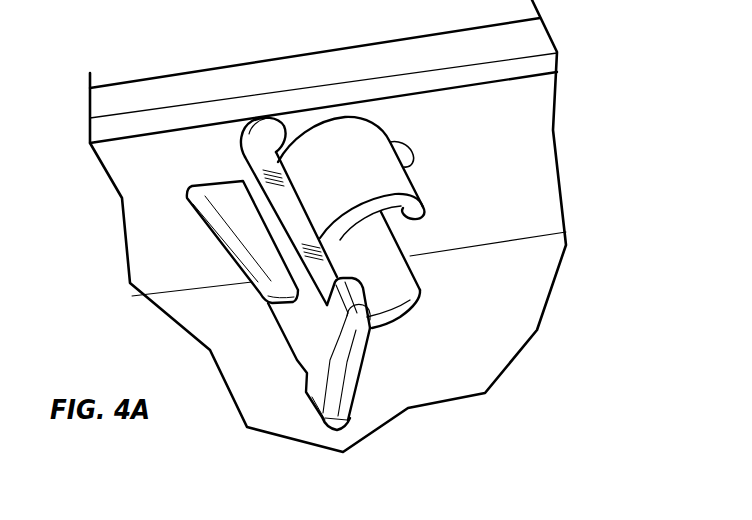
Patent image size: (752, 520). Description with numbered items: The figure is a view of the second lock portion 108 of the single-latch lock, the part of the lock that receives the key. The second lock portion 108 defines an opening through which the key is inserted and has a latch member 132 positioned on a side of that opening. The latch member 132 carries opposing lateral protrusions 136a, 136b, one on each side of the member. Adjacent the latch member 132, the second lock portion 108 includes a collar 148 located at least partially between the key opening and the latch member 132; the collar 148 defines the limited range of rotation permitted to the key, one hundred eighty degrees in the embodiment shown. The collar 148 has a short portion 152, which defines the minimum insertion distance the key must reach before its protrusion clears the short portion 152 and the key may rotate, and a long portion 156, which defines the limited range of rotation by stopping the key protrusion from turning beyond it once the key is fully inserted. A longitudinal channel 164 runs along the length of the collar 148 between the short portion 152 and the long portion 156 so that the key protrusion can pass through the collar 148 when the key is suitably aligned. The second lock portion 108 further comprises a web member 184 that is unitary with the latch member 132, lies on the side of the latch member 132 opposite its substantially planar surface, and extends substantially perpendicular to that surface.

The second lock portion 108 is at (520, 203).
The latch member 132 is at (353, 392).
The lateral protrusion 136a is at (305, 390).
The lateral protrusion 136b is at (337, 278).
The collar 148 is at (378, 157).
The short portion 152 is at (403, 208).
The long portion 156 is at (398, 313).
The longitudinal channel 164 is at (424, 268).
The web member 184 is at (247, 232).